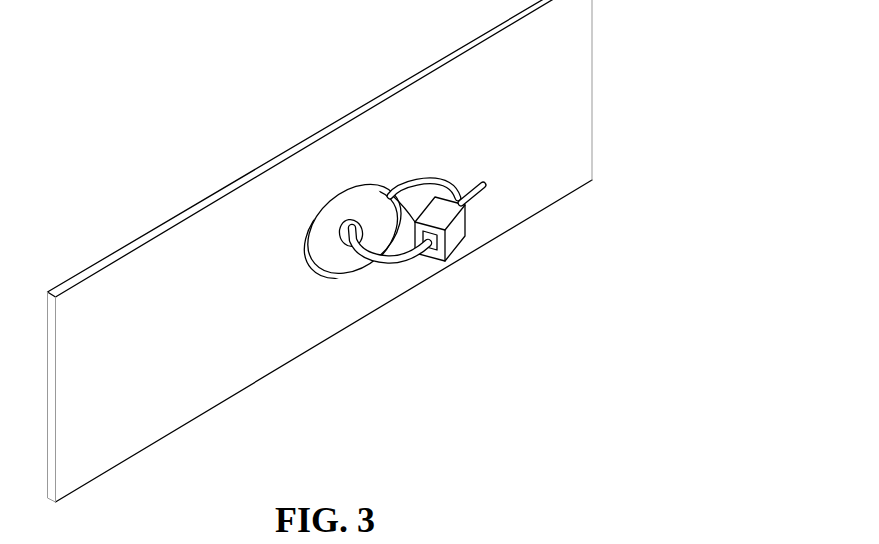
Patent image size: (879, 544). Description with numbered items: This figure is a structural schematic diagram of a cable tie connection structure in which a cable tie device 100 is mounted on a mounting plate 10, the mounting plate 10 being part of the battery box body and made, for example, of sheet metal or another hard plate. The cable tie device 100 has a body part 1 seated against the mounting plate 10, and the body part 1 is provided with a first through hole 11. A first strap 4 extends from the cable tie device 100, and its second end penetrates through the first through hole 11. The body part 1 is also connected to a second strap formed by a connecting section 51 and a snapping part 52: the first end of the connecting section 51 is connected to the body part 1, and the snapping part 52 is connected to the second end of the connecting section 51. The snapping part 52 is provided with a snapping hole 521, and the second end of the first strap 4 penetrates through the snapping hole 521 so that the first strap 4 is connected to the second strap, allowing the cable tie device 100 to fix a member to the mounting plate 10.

The mounting plate 10 is at (300, 188).
The cable tie device 100 is at (433, 224).
The body part 1 is at (332, 255).
The first through hole 11 is at (346, 247).
The first strap 4 is at (435, 261).
The connecting section 51 is at (422, 187).
The snapping part 52 is at (458, 231).
The snapping hole 521 is at (440, 252).